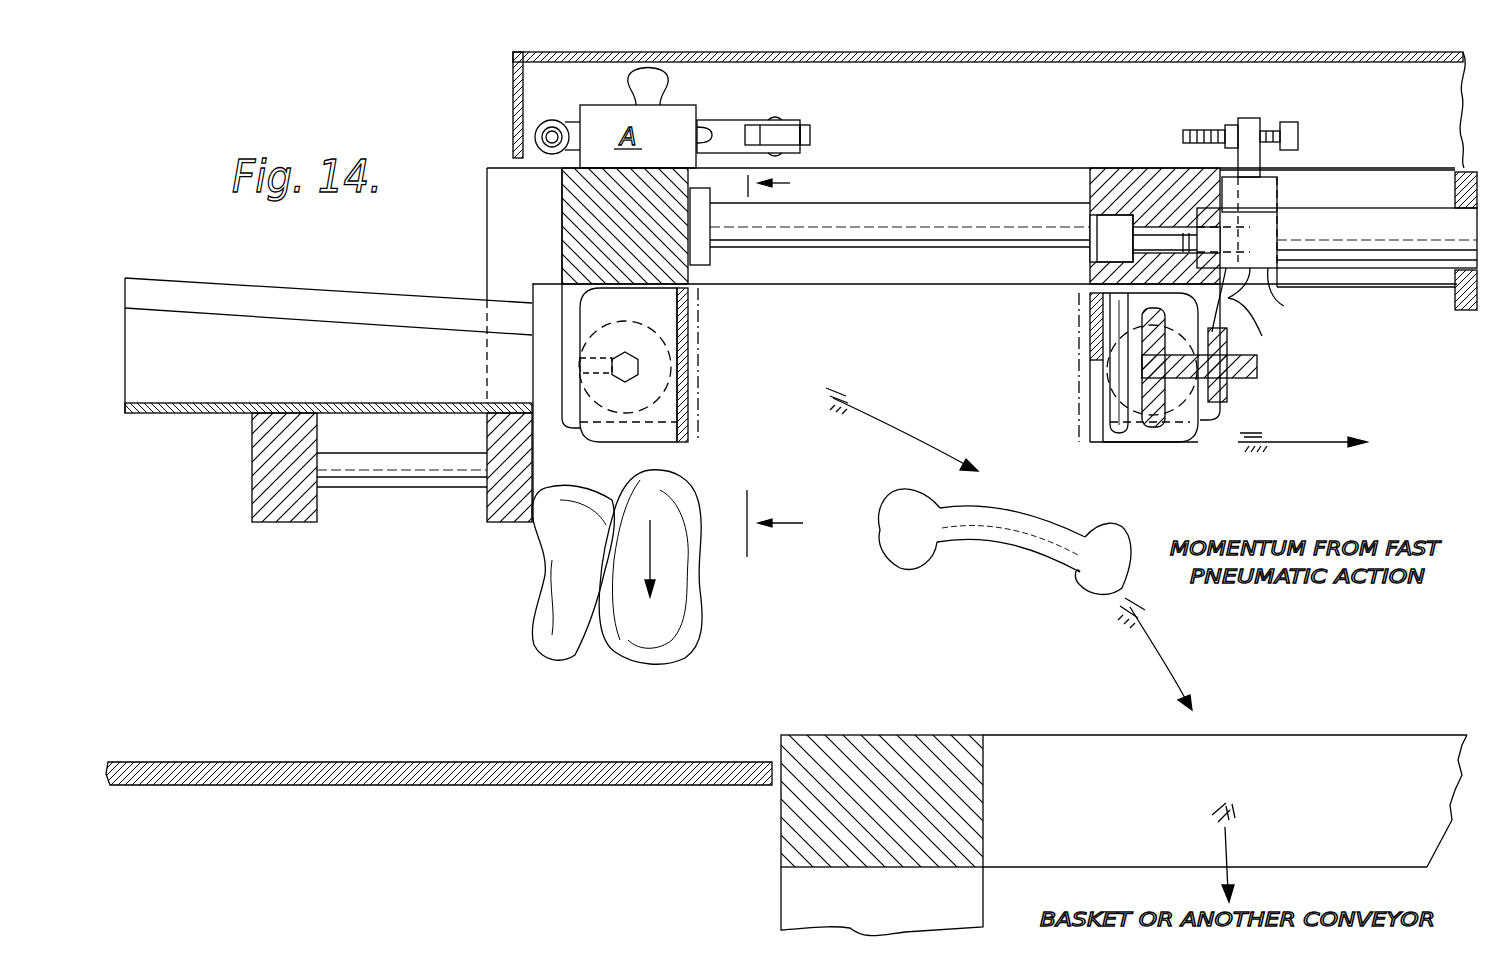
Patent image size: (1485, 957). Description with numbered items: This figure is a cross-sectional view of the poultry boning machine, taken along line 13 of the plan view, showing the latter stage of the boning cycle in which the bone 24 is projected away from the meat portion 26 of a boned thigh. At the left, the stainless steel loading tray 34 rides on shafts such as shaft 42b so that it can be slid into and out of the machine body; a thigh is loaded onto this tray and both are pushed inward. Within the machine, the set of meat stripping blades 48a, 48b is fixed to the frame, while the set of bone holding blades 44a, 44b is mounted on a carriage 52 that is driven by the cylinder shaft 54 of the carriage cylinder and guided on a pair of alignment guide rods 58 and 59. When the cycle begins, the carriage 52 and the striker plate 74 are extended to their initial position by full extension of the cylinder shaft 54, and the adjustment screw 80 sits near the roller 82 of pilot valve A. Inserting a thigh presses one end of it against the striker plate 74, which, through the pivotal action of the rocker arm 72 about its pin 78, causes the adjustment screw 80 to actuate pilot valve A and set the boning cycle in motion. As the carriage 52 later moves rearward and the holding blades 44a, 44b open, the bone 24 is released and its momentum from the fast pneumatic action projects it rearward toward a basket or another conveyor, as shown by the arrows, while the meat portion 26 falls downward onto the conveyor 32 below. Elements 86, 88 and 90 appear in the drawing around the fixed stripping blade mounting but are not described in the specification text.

The section line 13- 13 is at (784, 366).
The bone 24 is at (997, 542).
The meat portion 26 is at (688, 614).
The conveyor 32 is at (368, 765).
The loading tray 34 is at (228, 236).
The shaft 42b is at (400, 478).
The bone holding blade 44a is at (1090, 320).
The bone holding blade 44b is at (1080, 388).
The meat stripping blade 48a is at (686, 321).
The meat stripping blade 48b is at (697, 403).
The carriage 52 is at (1112, 175).
The cylinder shaft 54 is at (1402, 245).
The alignment guide rod 58 is at (930, 212).
The alignment guide rod 59 is at (1121, 432).
The rocker arm 72 is at (1238, 316).
The striker plate 74 is at (1153, 428).
The pin 78 is at (1255, 300).
The adjustment screw 80 is at (1195, 130).
The roller 82 is at (804, 132).
The plate 86 is at (658, 433).
The hex nut 88 is at (634, 353).
The disc 90 is at (625, 368).